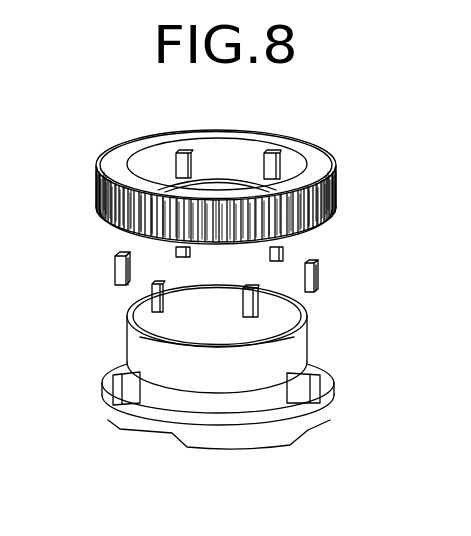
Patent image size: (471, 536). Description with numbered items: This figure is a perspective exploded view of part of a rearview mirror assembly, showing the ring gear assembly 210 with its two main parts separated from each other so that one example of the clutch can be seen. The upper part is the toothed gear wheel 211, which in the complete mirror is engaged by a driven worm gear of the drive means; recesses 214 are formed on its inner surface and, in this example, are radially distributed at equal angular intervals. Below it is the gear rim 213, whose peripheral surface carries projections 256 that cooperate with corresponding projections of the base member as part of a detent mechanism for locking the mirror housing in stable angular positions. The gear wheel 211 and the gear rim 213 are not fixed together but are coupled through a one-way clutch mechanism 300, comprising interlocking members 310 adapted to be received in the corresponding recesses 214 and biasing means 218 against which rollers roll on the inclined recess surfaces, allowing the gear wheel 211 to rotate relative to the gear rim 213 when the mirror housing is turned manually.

The ring gear assembly 210 is at (229, 180).
The gear wheel 211 is at (97, 191).
The recesses 214 is at (182, 150).
The biasing means 218 is at (118, 279).
The interlocking members 310 is at (120, 251).
The one-way clutch mechanism 300 is at (206, 280).
The gear rim 213 is at (337, 359).
The projections 256 is at (246, 442).